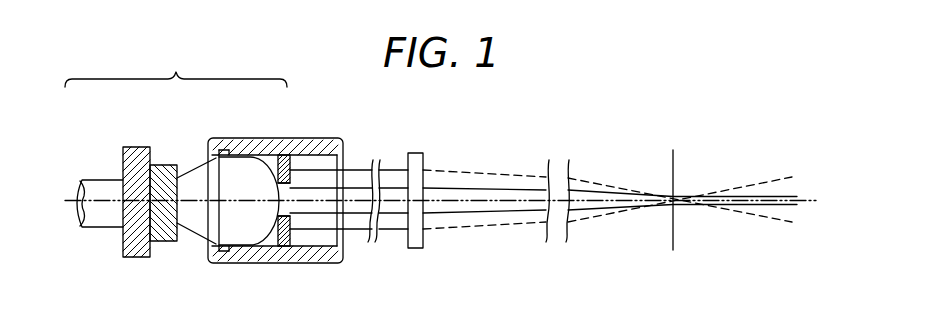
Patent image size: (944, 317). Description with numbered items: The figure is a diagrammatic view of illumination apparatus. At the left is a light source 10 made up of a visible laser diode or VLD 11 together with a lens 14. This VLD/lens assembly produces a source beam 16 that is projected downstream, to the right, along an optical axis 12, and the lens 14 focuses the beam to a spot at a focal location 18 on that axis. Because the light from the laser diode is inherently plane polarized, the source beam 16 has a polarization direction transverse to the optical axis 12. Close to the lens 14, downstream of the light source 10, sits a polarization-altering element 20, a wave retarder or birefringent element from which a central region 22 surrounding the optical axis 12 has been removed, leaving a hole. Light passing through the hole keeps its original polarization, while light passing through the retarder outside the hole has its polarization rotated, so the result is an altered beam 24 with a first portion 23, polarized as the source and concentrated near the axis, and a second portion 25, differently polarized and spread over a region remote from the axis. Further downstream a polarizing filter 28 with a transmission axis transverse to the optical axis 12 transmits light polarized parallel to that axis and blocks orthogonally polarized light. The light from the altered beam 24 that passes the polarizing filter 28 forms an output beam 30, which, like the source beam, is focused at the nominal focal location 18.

The light source 10 is at (176, 66).
The visible laser diode 11 is at (151, 258).
The optical axis 12 is at (812, 199).
The lens 14 is at (228, 168).
The source beam 16 is at (281, 154).
The focal location 18 is at (675, 160).
The polarization-altering element 20 is at (300, 139).
The central region 22 is at (291, 207).
The first portion 23 is at (392, 190).
The altered beam 24 is at (377, 160).
The second portion 25 is at (387, 223).
The polarizing filter 28 is at (425, 160).
The output beam 30 is at (528, 177).